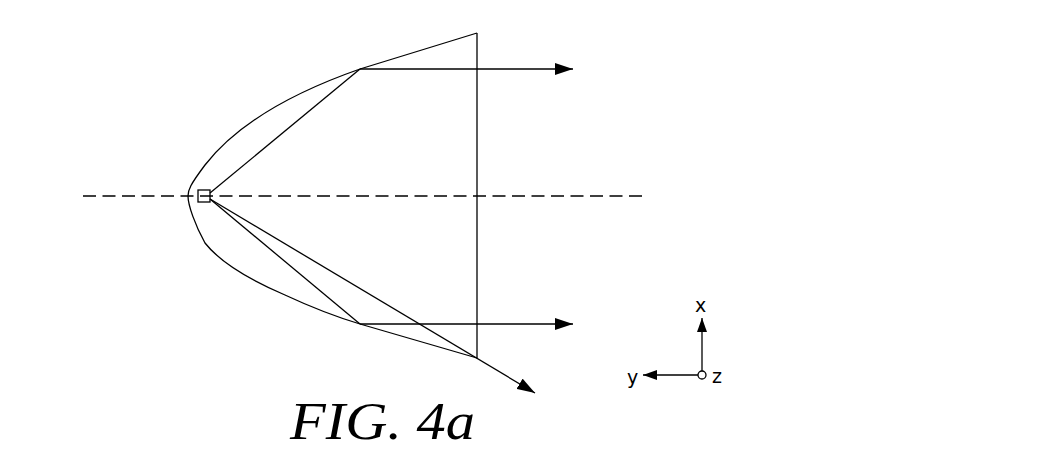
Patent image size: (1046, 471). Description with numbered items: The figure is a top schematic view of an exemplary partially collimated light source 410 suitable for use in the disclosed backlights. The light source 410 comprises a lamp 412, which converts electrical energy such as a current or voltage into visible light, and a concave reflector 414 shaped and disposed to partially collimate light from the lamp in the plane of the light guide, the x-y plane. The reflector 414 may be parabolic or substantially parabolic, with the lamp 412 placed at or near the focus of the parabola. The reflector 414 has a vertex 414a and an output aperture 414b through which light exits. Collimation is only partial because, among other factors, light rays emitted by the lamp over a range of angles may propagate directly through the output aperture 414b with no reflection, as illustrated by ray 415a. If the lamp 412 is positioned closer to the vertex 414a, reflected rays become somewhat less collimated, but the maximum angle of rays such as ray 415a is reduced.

The partially collimated light source 410 is at (176, 61).
The lamp 412 is at (200, 190).
The concave reflector 414 is at (403, 53).
The vertex 414a is at (188, 197).
The output aperture 414b is at (478, 233).
The ray 415a is at (502, 367).